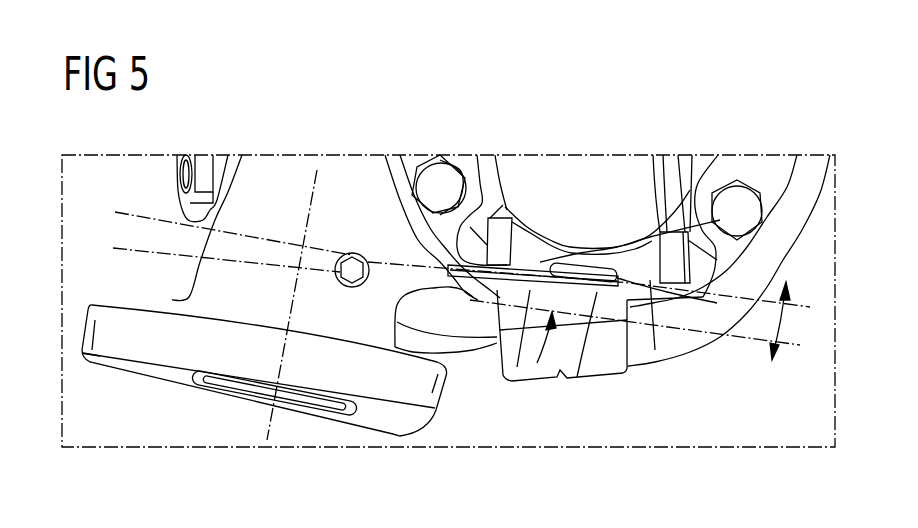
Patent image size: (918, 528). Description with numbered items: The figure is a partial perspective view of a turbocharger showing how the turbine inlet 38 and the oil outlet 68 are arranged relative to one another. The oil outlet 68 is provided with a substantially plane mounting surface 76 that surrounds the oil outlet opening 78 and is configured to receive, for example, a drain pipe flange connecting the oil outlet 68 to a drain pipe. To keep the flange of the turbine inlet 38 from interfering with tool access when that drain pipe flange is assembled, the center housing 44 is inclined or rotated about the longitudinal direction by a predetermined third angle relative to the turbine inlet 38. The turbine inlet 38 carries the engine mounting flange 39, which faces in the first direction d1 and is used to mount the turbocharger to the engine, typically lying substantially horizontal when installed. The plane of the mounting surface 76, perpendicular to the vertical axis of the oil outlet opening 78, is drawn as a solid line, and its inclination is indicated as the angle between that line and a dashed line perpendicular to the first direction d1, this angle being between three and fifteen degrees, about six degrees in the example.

The center housing 44 is at (583, 160).
The turbine inlet 38 is at (164, 375).
The engine mounting flange 39 is at (85, 352).
The oil outlet 68 is at (515, 375).
The oil outlet opening 78 is at (578, 375).
The mounting surface 76 is at (654, 350).
The first direction d1 is at (313, 187).